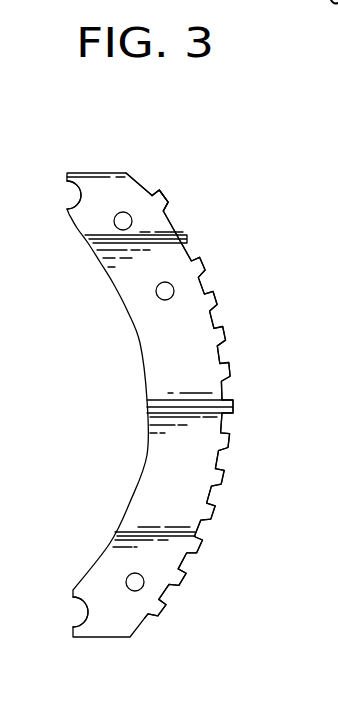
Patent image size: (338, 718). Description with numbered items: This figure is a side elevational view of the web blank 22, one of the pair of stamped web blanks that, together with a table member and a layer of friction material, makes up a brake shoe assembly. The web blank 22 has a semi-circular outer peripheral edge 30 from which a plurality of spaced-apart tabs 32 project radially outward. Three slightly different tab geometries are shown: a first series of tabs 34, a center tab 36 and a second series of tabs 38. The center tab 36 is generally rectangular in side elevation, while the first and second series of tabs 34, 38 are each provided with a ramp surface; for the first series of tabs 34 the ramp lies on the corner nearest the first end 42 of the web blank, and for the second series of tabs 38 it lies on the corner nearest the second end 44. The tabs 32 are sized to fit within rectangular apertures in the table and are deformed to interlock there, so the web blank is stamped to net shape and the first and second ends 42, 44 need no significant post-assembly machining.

The web blank 22 is at (95, 172).
The semi-circular outer peripheral edge 30 is at (148, 182).
The tabs 32 is at (164, 188).
The first series of tabs 34 is at (193, 166).
The center tab 36 is at (233, 406).
The second series of tabs 38 is at (270, 423).
The first end 42 is at (66, 173).
The second end 44 is at (73, 637).